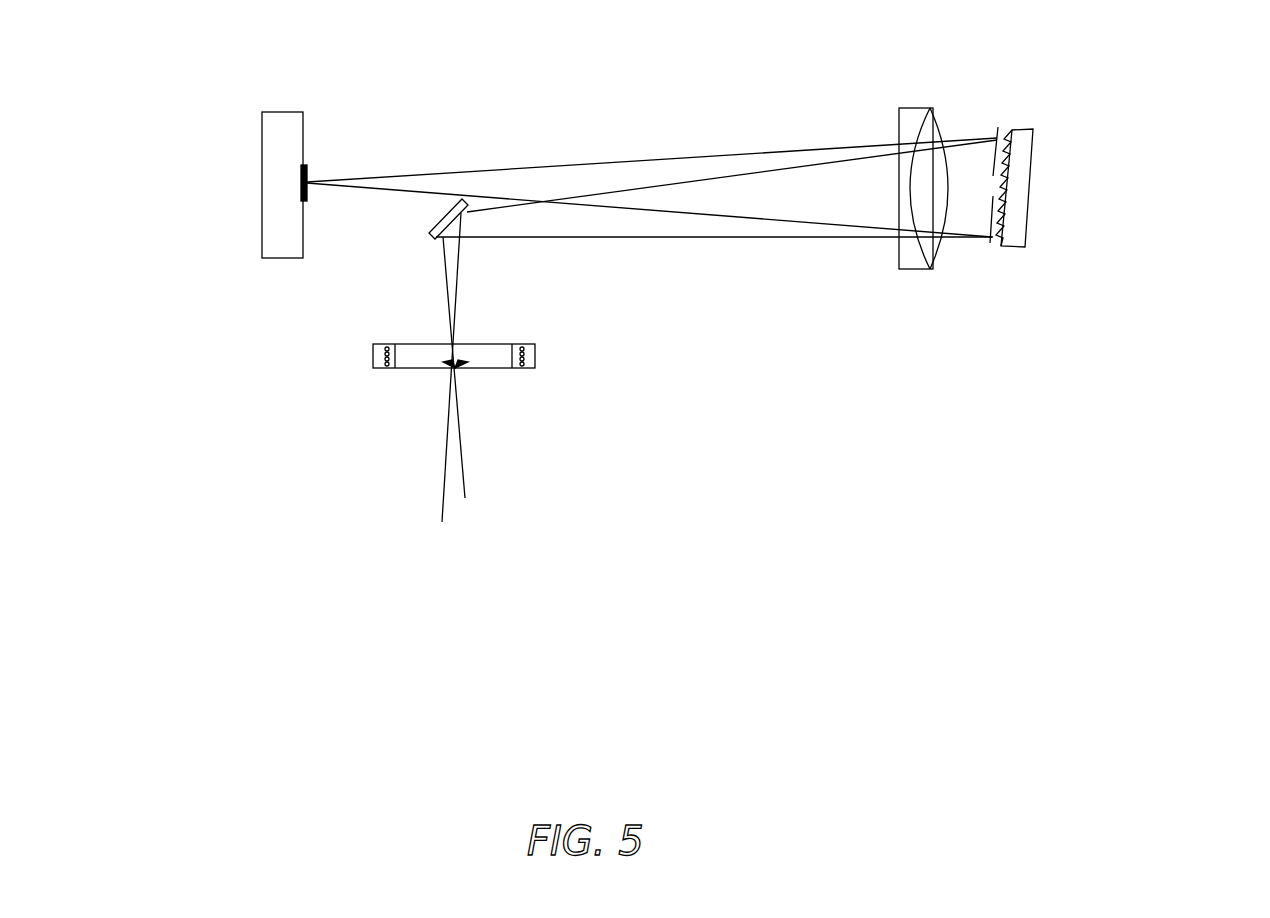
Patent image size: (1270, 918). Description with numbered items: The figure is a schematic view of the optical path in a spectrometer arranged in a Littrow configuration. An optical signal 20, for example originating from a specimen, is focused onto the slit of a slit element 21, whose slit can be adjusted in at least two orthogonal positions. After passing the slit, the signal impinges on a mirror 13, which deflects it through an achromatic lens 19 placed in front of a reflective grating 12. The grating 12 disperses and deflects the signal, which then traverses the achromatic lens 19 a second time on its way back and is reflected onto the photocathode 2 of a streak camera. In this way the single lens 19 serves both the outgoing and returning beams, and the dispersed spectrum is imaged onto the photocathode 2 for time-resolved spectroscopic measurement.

The photocathode 2 is at (246, 180).
The reflective grating 12 is at (1040, 193).
The mirror 13 is at (472, 188).
The achromatic lens 19 is at (920, 292).
The optical signal 20 is at (428, 453).
The slit element 21 is at (465, 380).